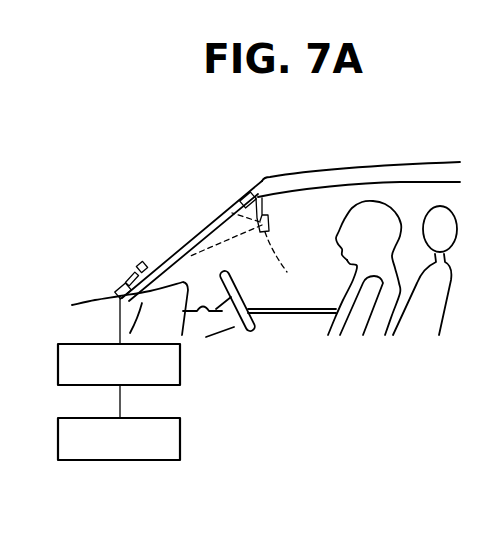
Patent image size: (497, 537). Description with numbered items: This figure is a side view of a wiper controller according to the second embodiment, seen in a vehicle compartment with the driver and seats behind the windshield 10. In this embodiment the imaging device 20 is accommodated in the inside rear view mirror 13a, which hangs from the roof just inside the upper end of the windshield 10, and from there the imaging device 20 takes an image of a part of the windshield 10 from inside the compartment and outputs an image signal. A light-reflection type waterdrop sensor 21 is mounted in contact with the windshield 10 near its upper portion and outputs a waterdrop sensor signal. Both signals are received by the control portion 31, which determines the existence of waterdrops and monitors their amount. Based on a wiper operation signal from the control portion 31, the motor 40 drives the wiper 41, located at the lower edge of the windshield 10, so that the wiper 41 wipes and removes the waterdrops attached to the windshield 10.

The windshield 10 is at (194, 236).
The light-reflection type waterdrop sensor 21 is at (246, 197).
The wiper 41 is at (140, 262).
The inside rear view mirror 13a is at (270, 223).
The imaging device 20 is at (282, 268).
The motor 40 is at (182, 365).
The control portion 31 is at (182, 438).